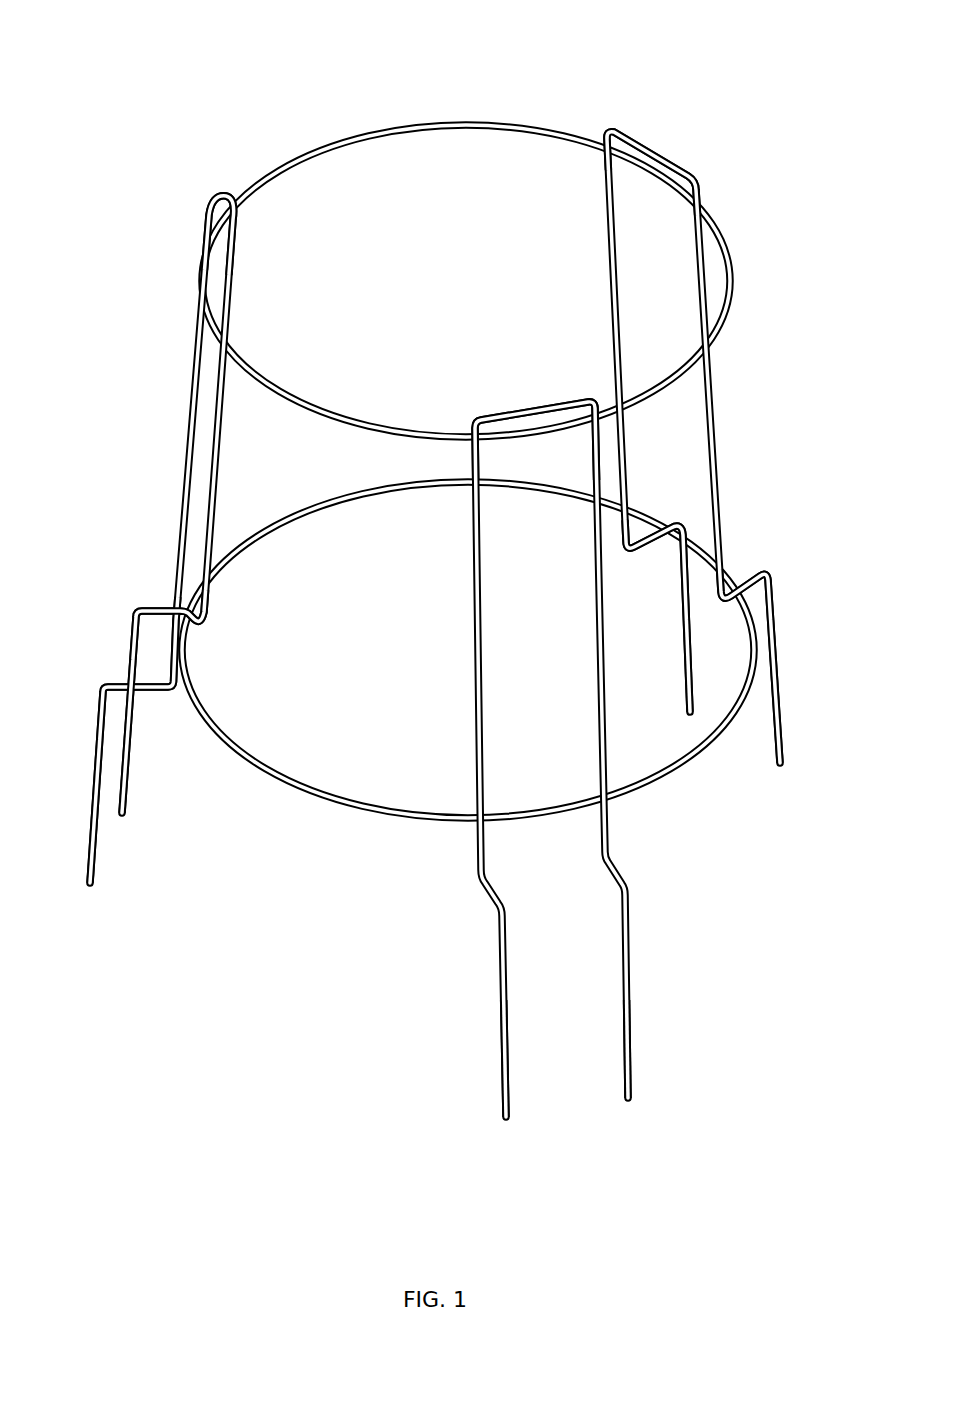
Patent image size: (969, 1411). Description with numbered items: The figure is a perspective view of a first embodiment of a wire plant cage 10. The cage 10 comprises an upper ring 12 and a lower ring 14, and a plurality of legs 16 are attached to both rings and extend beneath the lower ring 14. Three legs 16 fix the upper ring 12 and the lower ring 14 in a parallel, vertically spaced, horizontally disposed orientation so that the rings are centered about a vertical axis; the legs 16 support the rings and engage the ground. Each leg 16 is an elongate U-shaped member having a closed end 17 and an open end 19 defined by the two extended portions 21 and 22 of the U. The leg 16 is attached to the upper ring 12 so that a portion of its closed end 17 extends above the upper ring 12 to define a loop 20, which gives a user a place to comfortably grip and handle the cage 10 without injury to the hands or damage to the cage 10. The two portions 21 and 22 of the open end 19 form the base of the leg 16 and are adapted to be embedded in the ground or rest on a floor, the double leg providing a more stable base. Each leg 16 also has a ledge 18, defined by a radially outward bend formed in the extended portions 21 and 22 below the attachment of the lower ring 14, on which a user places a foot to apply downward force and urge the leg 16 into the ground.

The wire plant cage 10 is at (459, 579).
The upper ring 12 is at (722, 323).
The lower ring 14 is at (318, 800).
The leg 16 is at (186, 465).
The closed end 17 is at (203, 206).
The ledge 18 is at (159, 698).
The open end 19 is at (91, 889).
The loop 20 is at (665, 151).
The extended portion 21 is at (781, 728).
The extended portion 22 is at (692, 690).